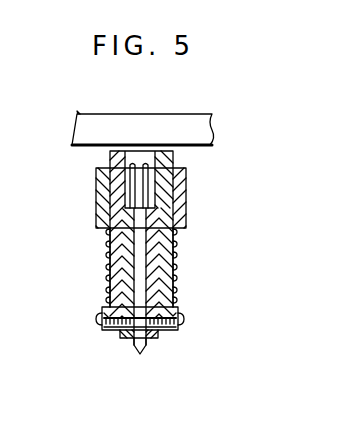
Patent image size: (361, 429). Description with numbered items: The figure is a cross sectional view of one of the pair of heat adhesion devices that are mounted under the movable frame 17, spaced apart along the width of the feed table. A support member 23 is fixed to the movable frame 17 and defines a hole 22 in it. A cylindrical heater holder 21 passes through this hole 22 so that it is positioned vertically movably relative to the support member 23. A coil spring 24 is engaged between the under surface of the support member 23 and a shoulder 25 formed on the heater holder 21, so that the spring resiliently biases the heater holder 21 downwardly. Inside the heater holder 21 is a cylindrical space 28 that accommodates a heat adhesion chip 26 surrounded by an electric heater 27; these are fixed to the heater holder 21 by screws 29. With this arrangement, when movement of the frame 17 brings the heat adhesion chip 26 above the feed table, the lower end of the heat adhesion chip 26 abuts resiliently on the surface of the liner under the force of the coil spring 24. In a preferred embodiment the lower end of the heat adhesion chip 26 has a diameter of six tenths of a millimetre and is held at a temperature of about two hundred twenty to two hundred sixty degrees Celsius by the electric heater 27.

The movable frame 17 is at (201, 125).
The hole 22 is at (191, 181).
The support member 23 is at (188, 178).
The cylindrical space 28 is at (128, 199).
The coil spring 24 is at (175, 263).
The heater holder 21 is at (176, 297).
The shoulder 25 is at (178, 307).
The screws 29 is at (101, 317).
The electric heater 27 is at (108, 333).
The heat adhesion chip 26 is at (144, 343).